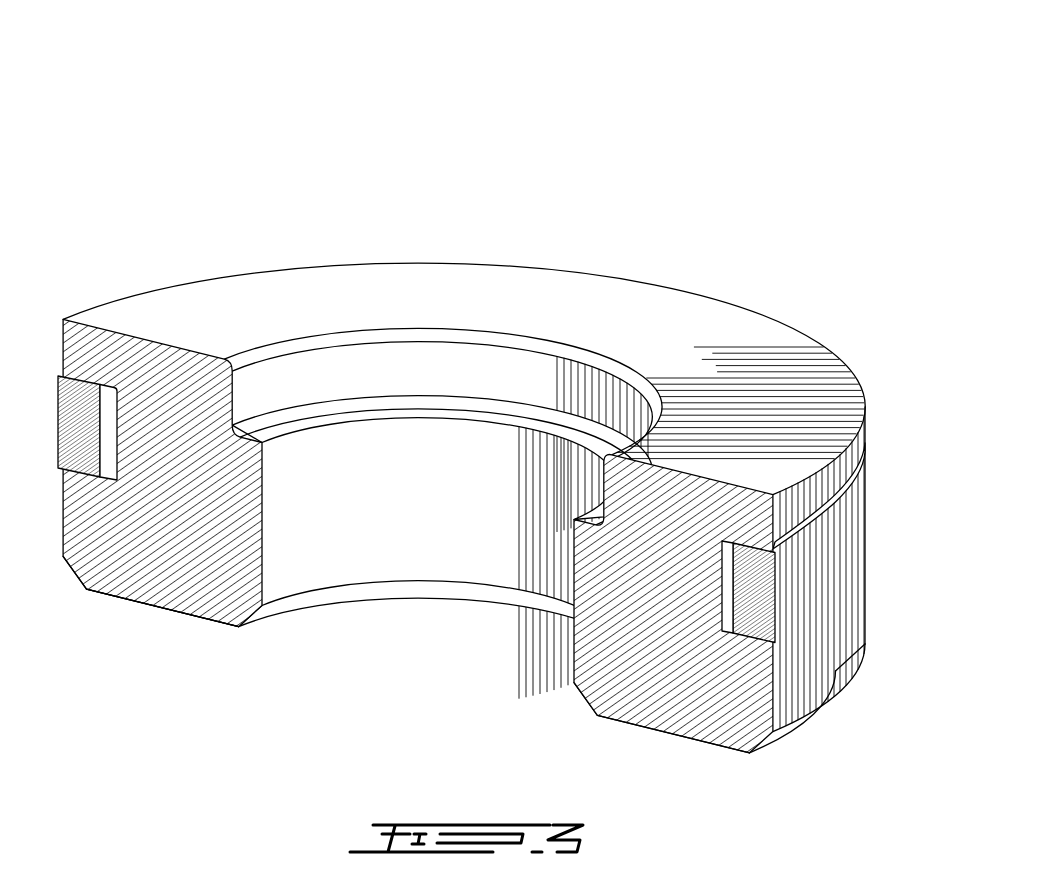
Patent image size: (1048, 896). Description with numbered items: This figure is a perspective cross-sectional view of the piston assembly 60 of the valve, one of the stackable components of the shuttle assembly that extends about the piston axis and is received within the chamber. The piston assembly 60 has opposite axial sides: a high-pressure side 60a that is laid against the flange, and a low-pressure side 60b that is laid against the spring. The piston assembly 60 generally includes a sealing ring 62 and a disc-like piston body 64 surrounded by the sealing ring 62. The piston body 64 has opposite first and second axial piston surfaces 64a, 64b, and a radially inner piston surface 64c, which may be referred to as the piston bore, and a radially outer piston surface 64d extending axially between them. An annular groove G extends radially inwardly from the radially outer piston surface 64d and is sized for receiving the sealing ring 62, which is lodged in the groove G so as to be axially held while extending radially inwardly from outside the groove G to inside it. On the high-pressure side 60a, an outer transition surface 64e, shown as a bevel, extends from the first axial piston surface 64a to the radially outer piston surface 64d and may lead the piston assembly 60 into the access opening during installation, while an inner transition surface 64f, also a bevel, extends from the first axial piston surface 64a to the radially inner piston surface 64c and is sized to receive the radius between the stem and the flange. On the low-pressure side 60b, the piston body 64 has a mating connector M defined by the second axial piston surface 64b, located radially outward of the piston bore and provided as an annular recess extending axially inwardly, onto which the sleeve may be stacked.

The piston assembly 60 is at (464, 407).
The high-pressure side 60a is at (168, 674).
The low-pressure side 60b is at (183, 300).
The sealing ring 62 is at (848, 567).
The piston body 64 is at (464, 559).
The first axial piston surface 64a is at (122, 598).
The second axial piston surface 64b is at (272, 312).
The radially inner piston surface 64c is at (355, 503).
The radially outer piston surface 64d is at (64, 515).
The outer transition surface 64e is at (775, 736).
The inner transition surface 64f is at (442, 593).
The mating connector M is at (443, 468).
The annular groove G is at (773, 551).